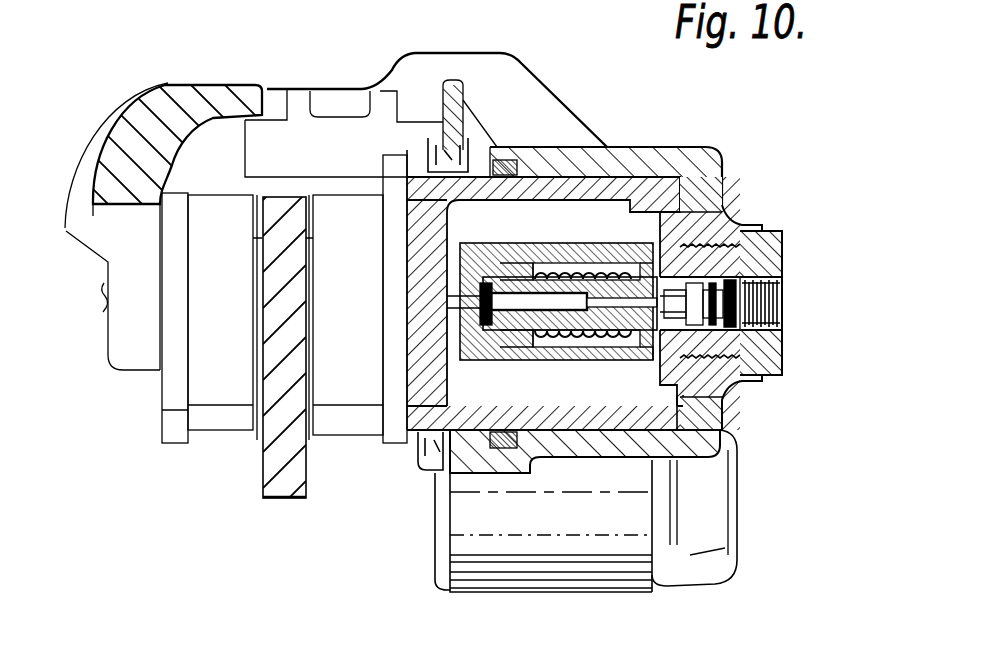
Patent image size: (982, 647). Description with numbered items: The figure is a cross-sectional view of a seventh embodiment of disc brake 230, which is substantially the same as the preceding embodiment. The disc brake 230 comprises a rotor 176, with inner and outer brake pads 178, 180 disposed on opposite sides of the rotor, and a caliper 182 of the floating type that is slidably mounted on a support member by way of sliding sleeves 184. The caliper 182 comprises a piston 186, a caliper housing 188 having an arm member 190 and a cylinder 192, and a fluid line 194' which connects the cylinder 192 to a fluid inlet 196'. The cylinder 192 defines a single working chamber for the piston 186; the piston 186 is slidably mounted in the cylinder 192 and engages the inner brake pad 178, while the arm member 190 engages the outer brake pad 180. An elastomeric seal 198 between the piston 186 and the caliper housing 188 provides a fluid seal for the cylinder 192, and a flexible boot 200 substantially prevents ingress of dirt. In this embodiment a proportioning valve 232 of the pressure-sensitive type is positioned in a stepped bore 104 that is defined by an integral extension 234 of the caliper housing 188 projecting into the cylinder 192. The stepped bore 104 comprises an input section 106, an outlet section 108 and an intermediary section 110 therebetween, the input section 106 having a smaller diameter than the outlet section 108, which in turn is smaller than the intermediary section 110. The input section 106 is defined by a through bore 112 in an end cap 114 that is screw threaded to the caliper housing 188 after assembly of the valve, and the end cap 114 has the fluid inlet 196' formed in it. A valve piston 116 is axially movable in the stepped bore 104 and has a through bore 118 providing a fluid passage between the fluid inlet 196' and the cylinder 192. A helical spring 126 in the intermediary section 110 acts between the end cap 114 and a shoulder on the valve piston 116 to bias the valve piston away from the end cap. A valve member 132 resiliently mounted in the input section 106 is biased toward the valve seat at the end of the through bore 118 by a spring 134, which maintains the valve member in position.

The stepped bore 104 is at (603, 253).
The input section 106 is at (652, 362).
The outlet section 108 is at (484, 283).
The intermediary section 110 is at (560, 265).
The through bore 112 is at (730, 318).
The end cap 114 is at (765, 348).
The valve piston 116 is at (518, 280).
The through bore 118 is at (496, 328).
The helical spring 126 is at (570, 349).
The valve member 132 is at (748, 296).
The spring 134 is at (727, 278).
The rotor 176 is at (288, 478).
The inner brake pad 178 is at (349, 417).
The outer brake pad 180 is at (225, 417).
The caliper 182 is at (650, 158).
The sliding sleeves 184 is at (707, 523).
The piston 186 is at (632, 415).
The caliper housing 188 is at (708, 208).
The arm member 190 is at (167, 107).
The cylinder 192 is at (682, 188).
The fluid line 194' is at (406, 299).
The fluid inlet 196' is at (798, 309).
The elastomeric seal 198 is at (502, 437).
The flexible boot 200 is at (425, 470).
The disc brake 230 is at (566, 80).
The proportioning valve 232 is at (512, 322).
The integral extension 234 is at (597, 416).